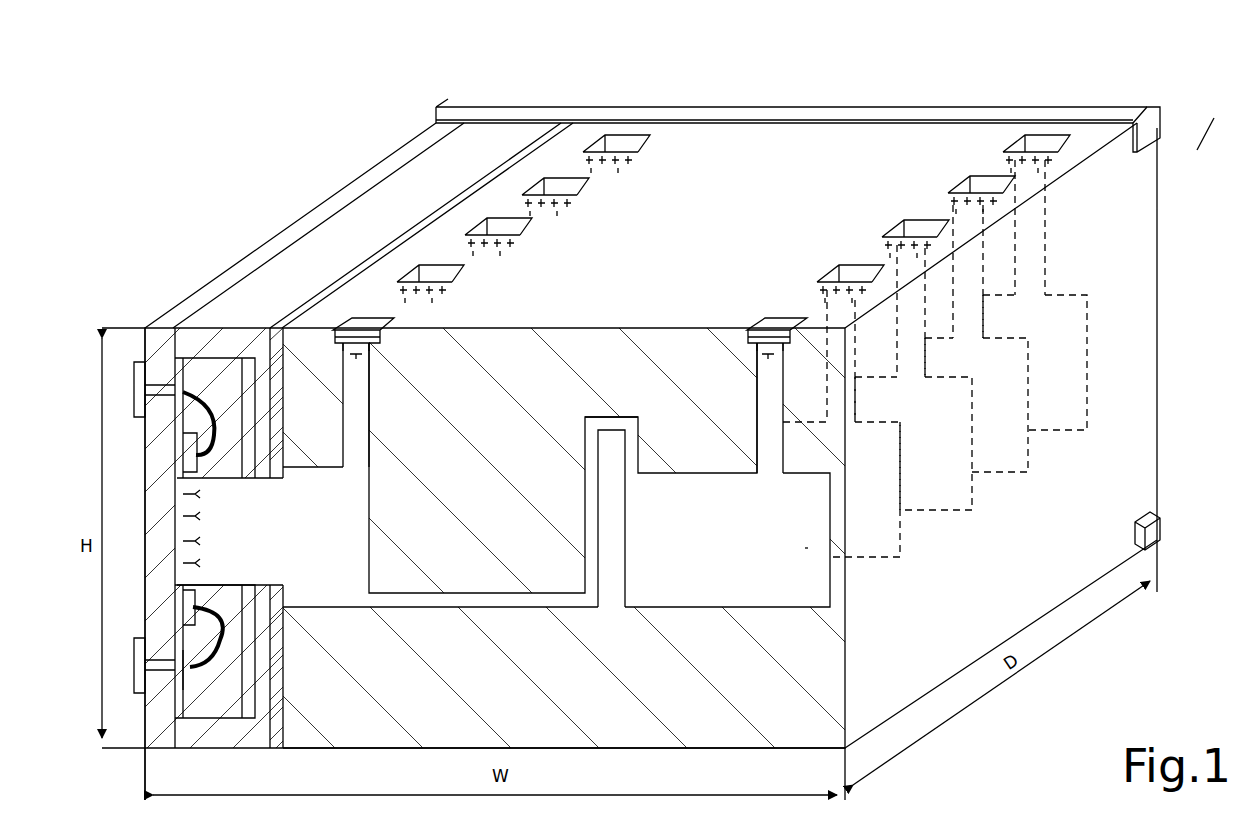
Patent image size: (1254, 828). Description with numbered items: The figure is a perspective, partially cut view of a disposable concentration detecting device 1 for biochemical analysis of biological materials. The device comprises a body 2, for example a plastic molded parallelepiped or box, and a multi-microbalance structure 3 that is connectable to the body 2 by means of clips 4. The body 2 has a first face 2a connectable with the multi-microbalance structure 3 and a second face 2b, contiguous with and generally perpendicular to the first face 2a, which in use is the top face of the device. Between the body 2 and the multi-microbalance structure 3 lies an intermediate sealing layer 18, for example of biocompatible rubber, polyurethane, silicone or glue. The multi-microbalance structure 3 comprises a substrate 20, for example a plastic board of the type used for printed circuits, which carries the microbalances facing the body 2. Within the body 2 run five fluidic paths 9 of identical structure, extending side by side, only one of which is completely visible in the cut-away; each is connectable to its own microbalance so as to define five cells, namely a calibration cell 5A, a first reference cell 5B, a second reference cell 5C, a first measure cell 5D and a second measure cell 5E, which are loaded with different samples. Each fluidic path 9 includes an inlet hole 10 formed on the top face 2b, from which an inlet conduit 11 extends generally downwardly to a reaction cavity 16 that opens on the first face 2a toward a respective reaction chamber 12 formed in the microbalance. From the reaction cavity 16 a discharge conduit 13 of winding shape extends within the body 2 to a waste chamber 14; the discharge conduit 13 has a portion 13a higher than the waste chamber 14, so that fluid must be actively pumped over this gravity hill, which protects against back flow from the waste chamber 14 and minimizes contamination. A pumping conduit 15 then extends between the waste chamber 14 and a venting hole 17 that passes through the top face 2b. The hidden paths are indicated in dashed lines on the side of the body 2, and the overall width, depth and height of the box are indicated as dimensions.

The concentration detecting device 1 is at (1183, 176).
The body 2 is at (1032, 584).
The first face 2a is at (275, 728).
The second face 2b is at (746, 138).
The multi-microbalance structure 3 is at (238, 300).
The clips 4 is at (1140, 112).
The calibration cell 5A is at (808, 548).
The first reference cell 5B is at (882, 516).
The second reference cell 5C is at (946, 487).
The first measure cell 5D is at (997, 443).
The second measure cell 5E is at (1050, 403).
The fluidic path 9 is at (858, 566).
The inlet hole 10 is at (555, 178).
The inlet conduit 11 is at (358, 402).
The reaction chamber 12 is at (386, 482).
The discharge conduit 13 is at (553, 600).
The higher portion of discharge conduit 13a is at (609, 418).
The waste chamber 14 is at (856, 451).
The pumping conduit 15 is at (752, 395).
The reaction cavity 16 is at (366, 514).
The venting hole 17 is at (1022, 150).
The intermediate sealing layer 18 is at (285, 722).
The substrate 20 is at (168, 316).